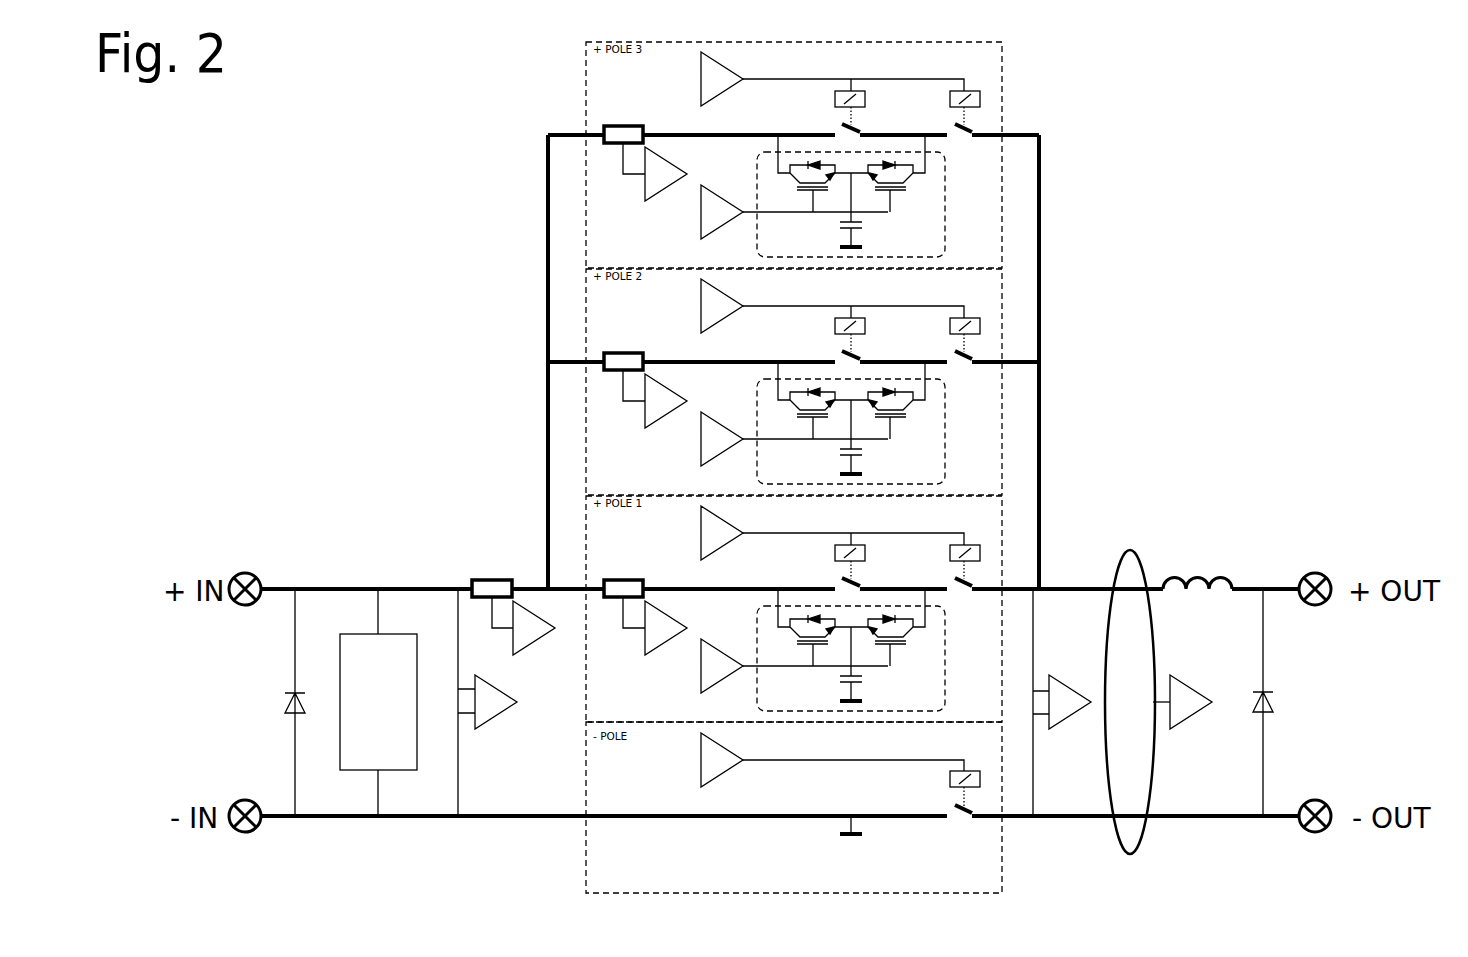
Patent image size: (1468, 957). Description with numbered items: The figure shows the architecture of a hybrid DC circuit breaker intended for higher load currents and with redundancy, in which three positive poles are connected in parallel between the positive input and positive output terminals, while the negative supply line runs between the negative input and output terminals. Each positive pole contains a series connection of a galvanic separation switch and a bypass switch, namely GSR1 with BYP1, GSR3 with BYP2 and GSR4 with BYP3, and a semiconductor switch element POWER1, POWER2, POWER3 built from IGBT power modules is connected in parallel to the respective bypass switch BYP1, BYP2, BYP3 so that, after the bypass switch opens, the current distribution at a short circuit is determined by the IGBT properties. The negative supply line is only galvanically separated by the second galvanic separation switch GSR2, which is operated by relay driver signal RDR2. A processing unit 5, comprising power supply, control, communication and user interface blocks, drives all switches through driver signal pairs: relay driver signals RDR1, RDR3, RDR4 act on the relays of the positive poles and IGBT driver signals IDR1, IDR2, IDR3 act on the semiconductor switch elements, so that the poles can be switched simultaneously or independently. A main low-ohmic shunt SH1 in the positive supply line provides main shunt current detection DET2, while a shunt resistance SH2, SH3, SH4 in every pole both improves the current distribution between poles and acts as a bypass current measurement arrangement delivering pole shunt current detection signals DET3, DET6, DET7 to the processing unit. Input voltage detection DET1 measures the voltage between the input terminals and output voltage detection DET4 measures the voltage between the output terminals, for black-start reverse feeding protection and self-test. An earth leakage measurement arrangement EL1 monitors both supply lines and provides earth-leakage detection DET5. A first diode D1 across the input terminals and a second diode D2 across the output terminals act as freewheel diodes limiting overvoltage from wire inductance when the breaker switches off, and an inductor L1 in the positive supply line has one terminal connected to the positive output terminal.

The processing unit 5 is at (405, 655).
The first diode D1 is at (283, 702).
The second diode D2 is at (1275, 702).
The inductor L1 is at (1197, 571).
The earth leakage measurement arrangement EL1 is at (1130, 692).
The low-ohmic shunt SH1 is at (492, 577).
The shunt resistance SH2 is at (623, 577).
The shunt resistance SH3 is at (623, 350).
The shunt resistance SH4 is at (623, 123).
The input voltage detection DET1 is at (487, 702).
The main shunt current detection DET2 is at (523, 626).
The pole shunt current detection DET3 is at (655, 626).
The output voltage detection DET4 is at (1062, 702).
The earth-leakage detection DET5 is at (1182, 702).
The pole shunt current detection DET6 is at (655, 399).
The pole shunt current detection DET7 is at (655, 172).
The IGBT driver signal IDR1 is at (794, 666).
The IGBT driver signal IDR2 is at (794, 439).
The IGBT driver signal IDR3 is at (794, 212).
The relay driver signal RDR1 is at (832, 533).
The relay driver signal RDR2 is at (832, 760).
The relay driver signal RDR3 is at (832, 306).
The relay driver signal RDR4 is at (832, 79).
The bypass switch BYP1 is at (865, 565).
The additional bypass switch BYP2 is at (865, 338).
The additional bypass switch BYP3 is at (865, 111).
The first galvanic separation switch GSR1 is at (948, 565).
The second galvanic separation switch GSR2 is at (948, 792).
The additional galvanic separation switch GSR3 is at (948, 338).
The additional galvanic separation switch GSR4 is at (948, 111).
The semiconductor switch element POWER1 is at (851, 650).
The additional semiconductor switch element POWER2 is at (851, 423).
The additional semiconductor switch element POWER3 is at (851, 196).